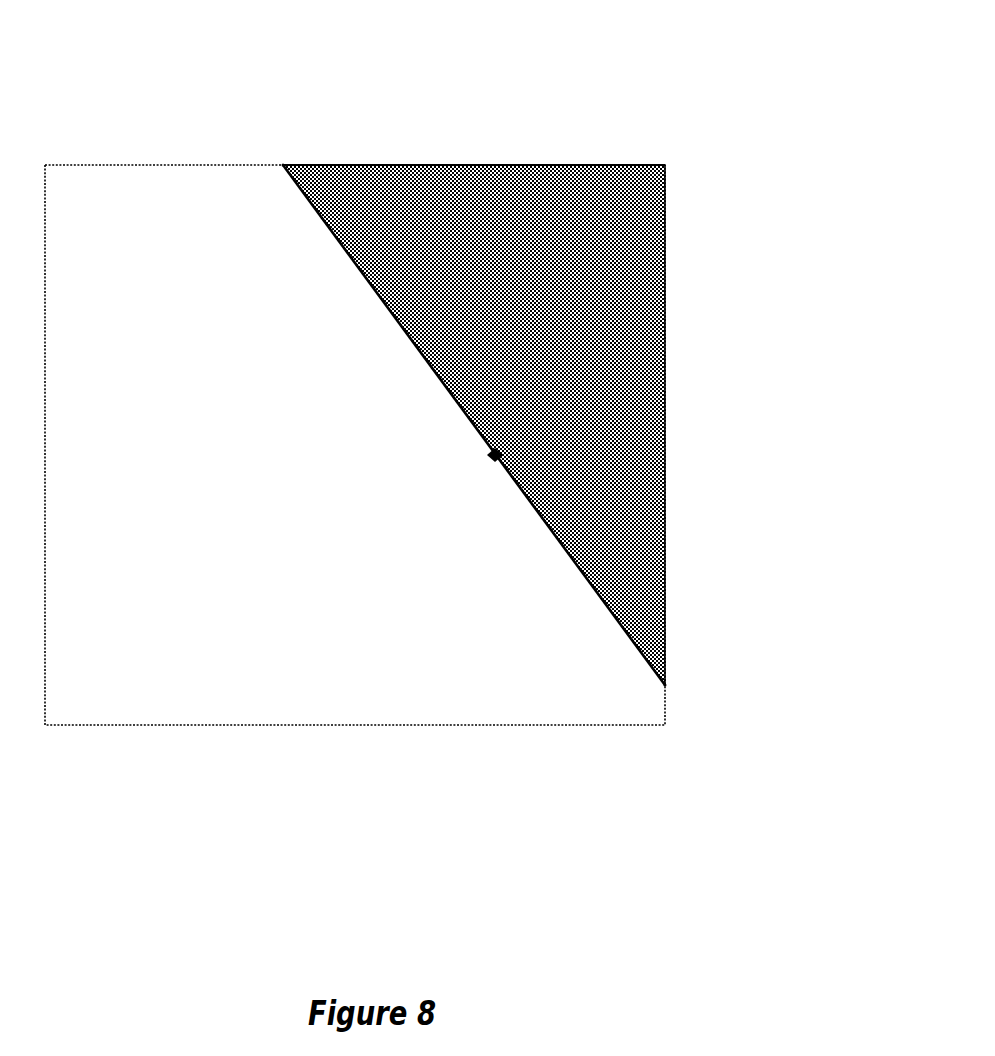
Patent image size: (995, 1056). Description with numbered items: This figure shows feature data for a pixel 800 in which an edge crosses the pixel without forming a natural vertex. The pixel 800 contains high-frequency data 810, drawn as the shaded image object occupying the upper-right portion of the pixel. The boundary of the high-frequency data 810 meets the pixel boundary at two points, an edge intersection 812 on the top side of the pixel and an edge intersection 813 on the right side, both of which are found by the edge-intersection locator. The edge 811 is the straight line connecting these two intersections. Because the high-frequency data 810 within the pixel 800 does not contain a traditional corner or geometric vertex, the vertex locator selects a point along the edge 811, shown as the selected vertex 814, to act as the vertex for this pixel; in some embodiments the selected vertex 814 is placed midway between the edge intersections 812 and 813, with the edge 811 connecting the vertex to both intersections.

The pixel 800 is at (158, 619).
The high-frequency data 810 is at (553, 217).
The edge 811 is at (540, 520).
The edge intersection 812 is at (275, 157).
The edge intersection 813 is at (657, 677).
The selected vertex 814 is at (467, 490).